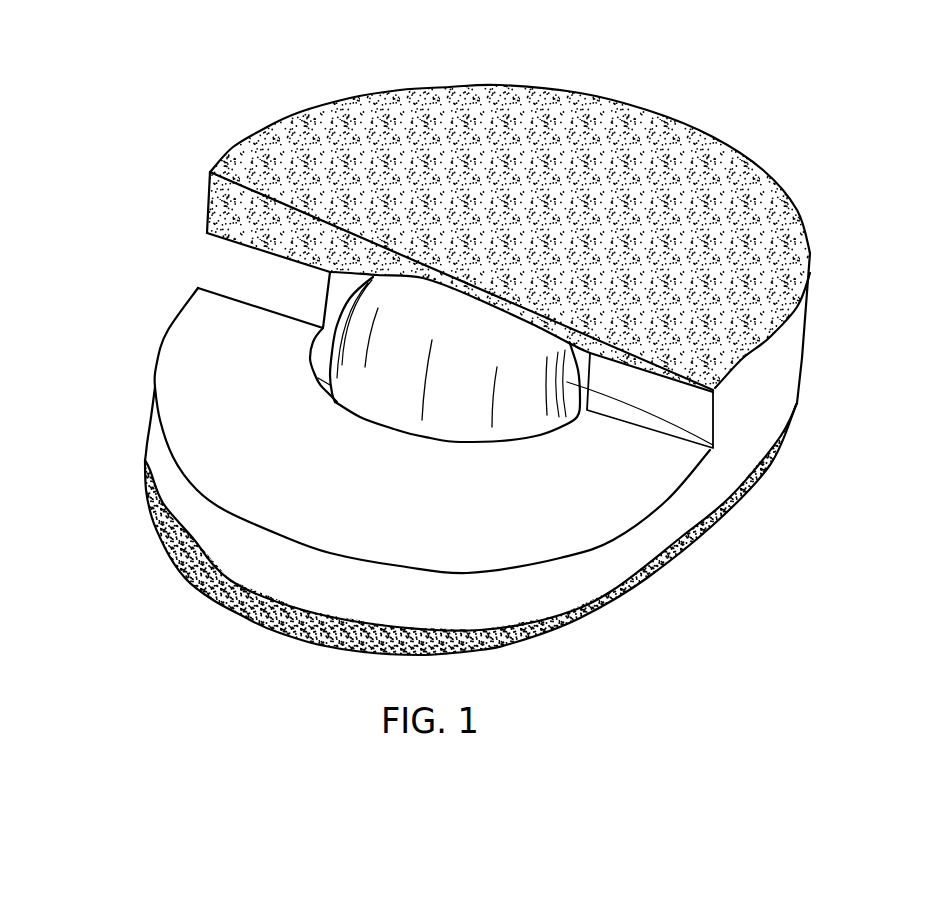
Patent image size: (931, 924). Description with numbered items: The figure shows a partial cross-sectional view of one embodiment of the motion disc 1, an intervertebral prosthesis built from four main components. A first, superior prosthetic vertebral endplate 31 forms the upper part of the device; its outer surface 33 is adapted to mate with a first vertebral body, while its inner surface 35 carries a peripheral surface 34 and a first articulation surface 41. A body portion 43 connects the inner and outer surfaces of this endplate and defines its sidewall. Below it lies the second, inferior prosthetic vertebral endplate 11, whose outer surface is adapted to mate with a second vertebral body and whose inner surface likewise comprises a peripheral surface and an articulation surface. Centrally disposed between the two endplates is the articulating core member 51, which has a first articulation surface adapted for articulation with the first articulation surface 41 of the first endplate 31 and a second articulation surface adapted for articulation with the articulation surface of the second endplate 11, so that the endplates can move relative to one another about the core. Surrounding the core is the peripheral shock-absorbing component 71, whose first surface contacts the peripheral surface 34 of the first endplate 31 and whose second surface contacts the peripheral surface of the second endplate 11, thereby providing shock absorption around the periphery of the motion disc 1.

The motion disc 1 is at (62, 324).
The second prosthetic vertebral endplate 11 is at (220, 610).
The first prosthetic vertebral endplate 31 is at (728, 173).
The outer surface 33 is at (227, 180).
The peripheral surface 34 is at (267, 252).
The inner surface 35 is at (208, 222).
The first articulation surface 41 is at (423, 277).
The body portion 43 is at (290, 215).
The articulating core member 51 is at (713, 446).
The peripheral shock-absorbing component 71 is at (617, 568).